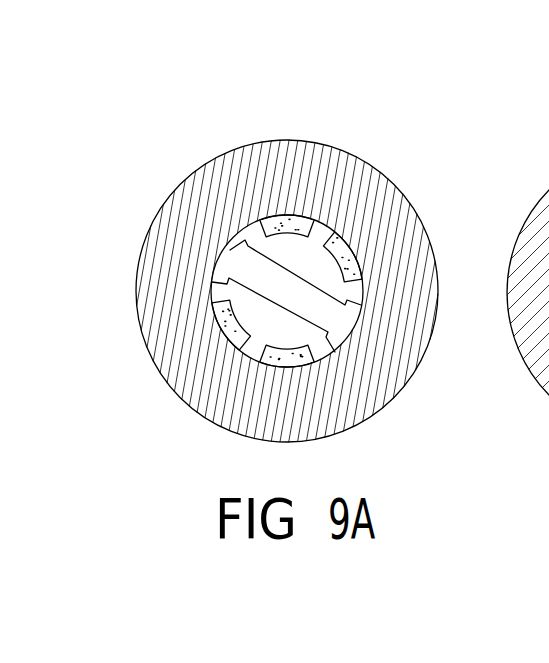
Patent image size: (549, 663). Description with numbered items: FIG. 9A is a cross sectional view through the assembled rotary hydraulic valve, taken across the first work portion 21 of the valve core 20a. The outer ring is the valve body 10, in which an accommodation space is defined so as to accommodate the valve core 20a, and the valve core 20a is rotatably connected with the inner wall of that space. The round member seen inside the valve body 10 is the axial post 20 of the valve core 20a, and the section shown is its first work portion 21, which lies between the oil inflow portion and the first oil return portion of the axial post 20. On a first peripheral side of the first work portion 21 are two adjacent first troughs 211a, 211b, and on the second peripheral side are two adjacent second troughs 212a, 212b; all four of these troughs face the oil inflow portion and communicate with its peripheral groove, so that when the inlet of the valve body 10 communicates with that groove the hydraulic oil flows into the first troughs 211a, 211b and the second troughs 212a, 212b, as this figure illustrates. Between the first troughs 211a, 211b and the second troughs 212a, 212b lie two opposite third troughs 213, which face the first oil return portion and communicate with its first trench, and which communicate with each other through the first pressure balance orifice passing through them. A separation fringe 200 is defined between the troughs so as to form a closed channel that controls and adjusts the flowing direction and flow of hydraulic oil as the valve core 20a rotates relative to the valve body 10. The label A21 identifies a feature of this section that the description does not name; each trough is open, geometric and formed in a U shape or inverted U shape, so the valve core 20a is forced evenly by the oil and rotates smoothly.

The valve body 10 is at (240, 155).
The separation fringe 200 is at (294, 280).
The valve core 20a is at (372, 224).
The axial post 20 is at (372, 224).
The first work portion 21 is at (325, 223).
The second trough 212a is at (293, 222).
The second trough 212b is at (350, 258).
The first trough 211a is at (289, 355).
The first trough 211b is at (228, 323).
The third trough 213 is at (230, 250).
The axis / slot A21 is at (263, 278).